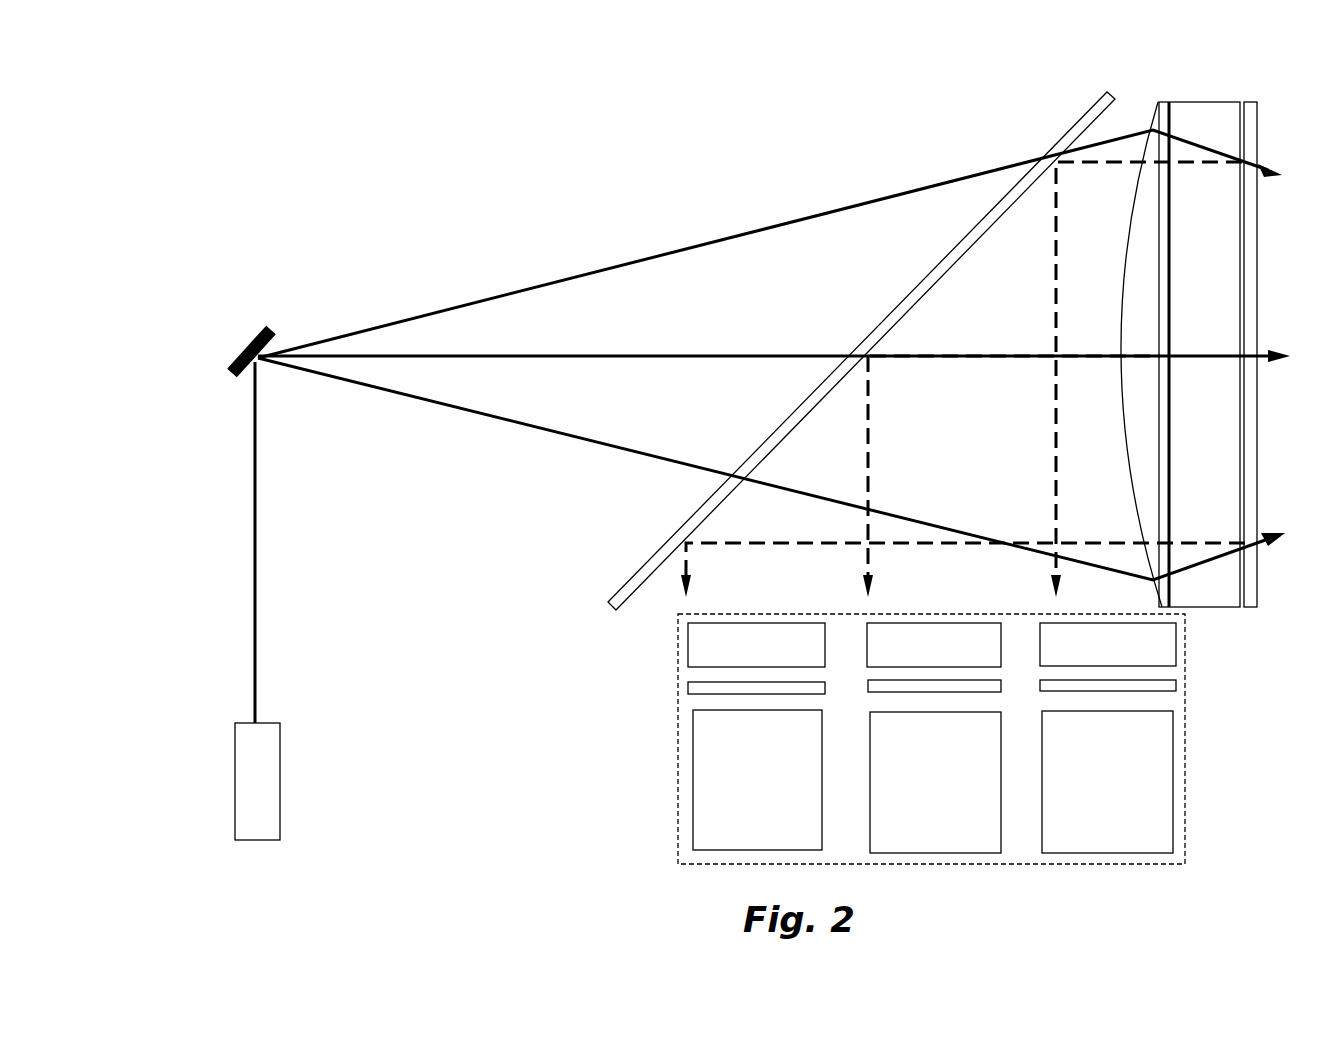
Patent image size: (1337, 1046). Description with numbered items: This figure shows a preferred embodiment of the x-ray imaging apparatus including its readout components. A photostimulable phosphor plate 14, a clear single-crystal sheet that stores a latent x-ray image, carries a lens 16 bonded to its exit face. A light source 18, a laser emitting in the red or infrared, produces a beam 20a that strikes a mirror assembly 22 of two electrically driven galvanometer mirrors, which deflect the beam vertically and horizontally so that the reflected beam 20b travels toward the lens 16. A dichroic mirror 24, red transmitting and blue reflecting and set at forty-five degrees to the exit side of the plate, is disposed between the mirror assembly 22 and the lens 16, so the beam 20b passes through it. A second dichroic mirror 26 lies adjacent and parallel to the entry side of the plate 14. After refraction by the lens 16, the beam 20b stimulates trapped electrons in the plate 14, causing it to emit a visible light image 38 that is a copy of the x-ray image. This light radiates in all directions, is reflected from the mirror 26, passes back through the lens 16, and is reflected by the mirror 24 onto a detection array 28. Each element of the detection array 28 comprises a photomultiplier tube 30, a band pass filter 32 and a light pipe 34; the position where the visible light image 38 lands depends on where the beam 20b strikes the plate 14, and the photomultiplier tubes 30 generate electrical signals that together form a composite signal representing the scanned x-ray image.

The photostimulable phosphor plate 14 is at (1205, 113).
The lens 16 is at (1140, 488).
The light source 18 is at (280, 795).
The beam 20a is at (255, 618).
The reflected beam 20b is at (467, 302).
The mirror assembly 22 is at (265, 325).
The dichroic mirror 24 is at (713, 490).
The second dichroic mirror 26 is at (1252, 277).
The detection array 28 is at (678, 803).
The photomultiplier tube 30 is at (692, 755).
The band pass filter 32 is at (688, 688).
The light pipe 34 is at (688, 636).
The visible light image 38 is at (1052, 270).